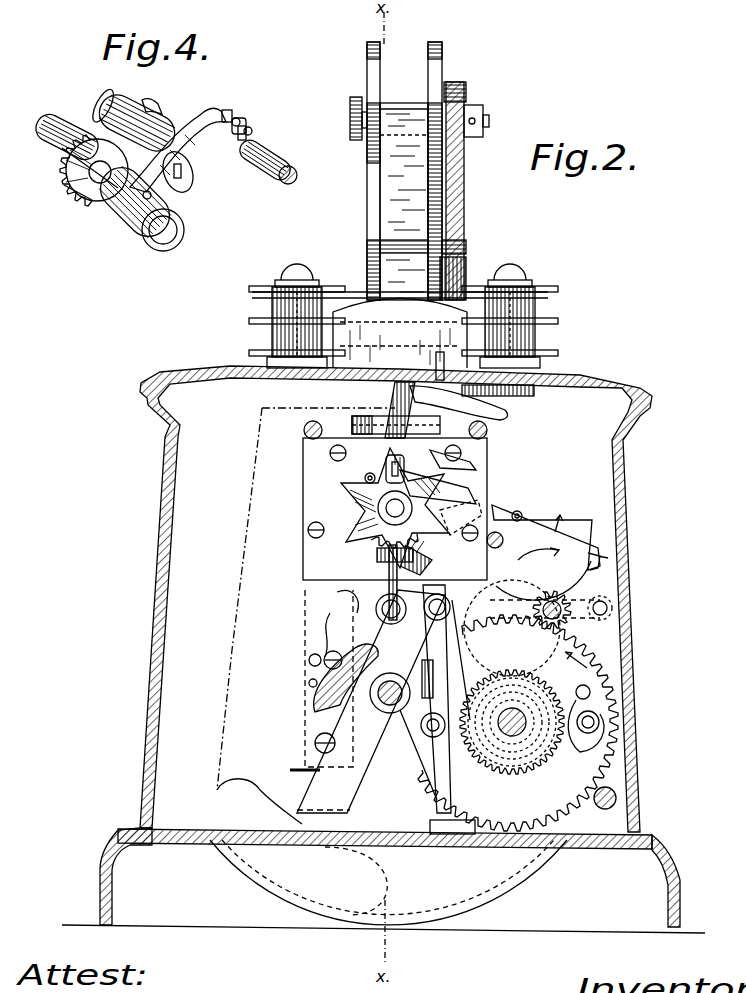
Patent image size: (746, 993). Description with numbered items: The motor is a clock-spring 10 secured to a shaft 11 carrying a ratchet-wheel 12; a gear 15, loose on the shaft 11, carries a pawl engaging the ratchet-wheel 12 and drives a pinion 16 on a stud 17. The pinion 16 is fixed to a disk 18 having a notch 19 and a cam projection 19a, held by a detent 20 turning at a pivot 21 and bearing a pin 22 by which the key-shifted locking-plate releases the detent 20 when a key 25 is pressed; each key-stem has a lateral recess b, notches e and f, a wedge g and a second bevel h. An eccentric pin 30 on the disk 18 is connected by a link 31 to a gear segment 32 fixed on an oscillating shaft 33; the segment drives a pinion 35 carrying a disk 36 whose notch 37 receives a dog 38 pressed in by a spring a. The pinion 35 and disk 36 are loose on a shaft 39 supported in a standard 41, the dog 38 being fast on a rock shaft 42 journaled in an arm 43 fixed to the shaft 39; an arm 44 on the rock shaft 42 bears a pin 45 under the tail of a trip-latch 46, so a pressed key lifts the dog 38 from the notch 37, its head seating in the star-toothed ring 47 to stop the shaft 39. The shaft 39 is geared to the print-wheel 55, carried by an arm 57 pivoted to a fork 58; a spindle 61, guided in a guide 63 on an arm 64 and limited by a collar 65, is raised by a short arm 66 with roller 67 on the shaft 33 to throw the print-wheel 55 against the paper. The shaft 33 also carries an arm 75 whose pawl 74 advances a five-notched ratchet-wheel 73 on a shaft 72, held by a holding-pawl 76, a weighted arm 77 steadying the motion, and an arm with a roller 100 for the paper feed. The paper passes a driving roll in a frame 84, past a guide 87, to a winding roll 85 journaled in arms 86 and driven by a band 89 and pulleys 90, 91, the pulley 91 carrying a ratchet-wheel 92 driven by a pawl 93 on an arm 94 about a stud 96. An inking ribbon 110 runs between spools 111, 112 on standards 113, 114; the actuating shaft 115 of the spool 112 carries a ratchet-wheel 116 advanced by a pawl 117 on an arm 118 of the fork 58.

In FIG. 2, the clock-spring 10 is at (612, 787).
In FIG. 2, the shaft 11 is at (508, 730).
In FIG. 2, the ratchet-wheel 12 is at (540, 690).
In FIG. 2, the gear 15 is at (638, 733).
In FIG. 2, the pinion 16 is at (558, 594).
In FIG. 2, the stud 17 is at (545, 602).
In FIG. 2, the disk 18 is at (606, 630).
In FIG. 2, the notch 19 is at (587, 573).
In FIG. 2, the cam projection 19a is at (603, 570).
In FIG. 2, the detent 20 is at (562, 522).
In FIG. 2, the pivot 21 is at (444, 462).
In FIG. 2, the projecting pin 22 is at (520, 514).
In FIG. 4, the spring-seated keys 25 is at (272, 158).
In FIG. 2, the eccentric pin 30 is at (612, 608).
In FIG. 2, the link 31 is at (478, 662).
In FIG. 2, the gear segment 32 is at (413, 561).
In FIG. 2, the shaft 33 is at (384, 708).
In FIG. 4, the pinion 35 is at (72, 166).
In FIG. 2, the pinion 35 is at (385, 522).
In FIG. 4, the disk 36 is at (70, 190).
In FIG. 2, the disk 36 is at (392, 532).
In FIG. 2, the notch 37 is at (461, 531).
In FIG. 4, the dog 38 is at (172, 128).
In FIG. 2, the dog 38 is at (458, 494).
In FIG. 4, the shaft 39 is at (52, 120).
In FIG. 2, the shaft 39 is at (385, 508).
In FIG. 2, the standard 41 is at (304, 777).
In FIG. 4, the rock shaft 42 is at (185, 180).
In FIG. 4, the arm 43 is at (92, 196).
In FIG. 4, the arm 44 is at (160, 192).
In FIG. 2, the arm 44 is at (365, 492).
In FIG. 4, the pin 45 is at (145, 215).
In FIG. 4, the trip-latch 46 is at (200, 150).
In FIG. 2, the trip-latch 46 is at (386, 480).
In FIG. 2, the star-toothed ring 47 is at (302, 552).
In FIG. 2, the print-wheel 55 is at (400, 334).
In FIG. 2, the arm 57 is at (352, 422).
In FIG. 2, the fork 58 is at (362, 412).
In FIG. 2, the spindle 61 is at (396, 596).
In FIG. 2, the guide 63 is at (435, 616).
In FIG. 2, the arm 64 is at (330, 686).
In FIG. 2, the collar 65 is at (388, 620).
In FIG. 2, the short arm 66 is at (430, 737).
In FIG. 2, the small roller 67 is at (413, 673).
In FIG. 2, the shaft 72 is at (322, 606).
In FIG. 2, the ratchet-wheel 73 is at (350, 606).
In FIG. 2, the spring pressed pawl 74 is at (458, 685).
In FIG. 2, the arm 75 is at (430, 752).
In FIG. 2, the holding-pawl 76 is at (335, 635).
In FIG. 2, the weighted arm 77 is at (371, 701).
In FIG. 2, the frame 84 is at (367, 192).
In FIG. 2, the winding roll 85 is at (489, 120).
In FIG. 2, the arms 86 is at (367, 64).
In FIG. 2, the guide 87 is at (384, 244).
In FIG. 2, the band 89 is at (464, 180).
In FIG. 2, the pulley 90 is at (466, 98).
In FIG. 2, the pulley 91 is at (462, 273).
In FIG. 2, the ratchet-wheel 92 is at (466, 246).
In FIG. 2, the pawl 93 is at (443, 361).
In FIG. 2, the arm 94 is at (497, 433).
In FIG. 2, the stud 96 is at (508, 542).
In FIG. 2, the roller 100 is at (440, 795).
In FIG. 2, the inking ribbon 110 is at (343, 296).
In FIG. 2, the spool 111 is at (268, 290).
In FIG. 2, the spool 112 is at (535, 292).
In FIG. 2, the standard 113 is at (266, 360).
In FIG. 2, the standard 114 is at (540, 361).
In FIG. 2, the actuating shaft 115 is at (562, 376).
In FIG. 2, the ratchet-wheel 116 is at (534, 392).
In FIG. 2, the pawl 117 is at (503, 412).
In FIG. 2, the arm 118 is at (394, 418).
In FIG. 4, the spring a is at (154, 108).
In FIG. 4, the lateral recess b is at (246, 125).
In FIG. 4, the notch e is at (226, 110).
In FIG. 4, the notch f is at (243, 140).
In FIG. 4, the wedge g is at (238, 118).
In FIG. 4, the second bevel h is at (252, 130).